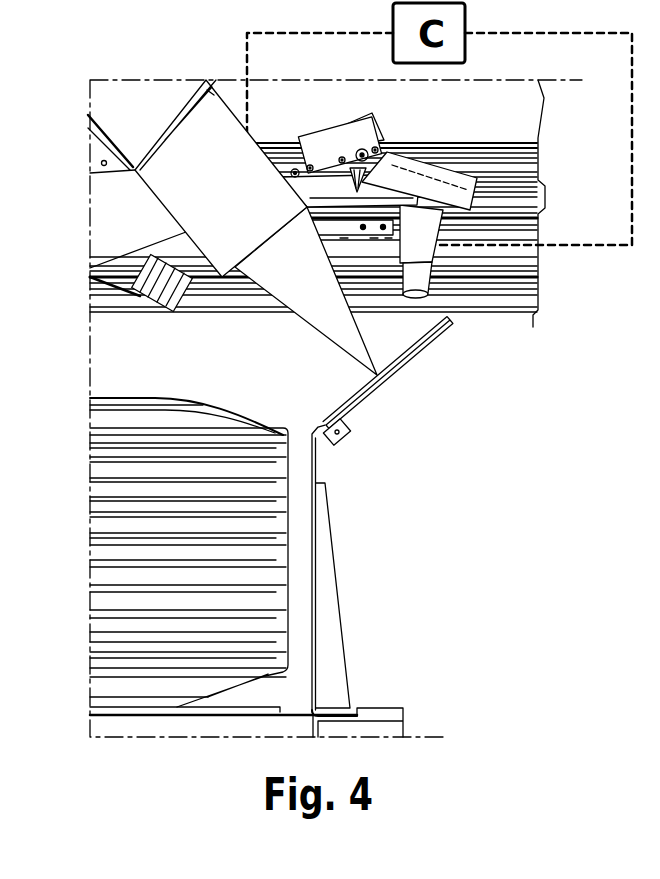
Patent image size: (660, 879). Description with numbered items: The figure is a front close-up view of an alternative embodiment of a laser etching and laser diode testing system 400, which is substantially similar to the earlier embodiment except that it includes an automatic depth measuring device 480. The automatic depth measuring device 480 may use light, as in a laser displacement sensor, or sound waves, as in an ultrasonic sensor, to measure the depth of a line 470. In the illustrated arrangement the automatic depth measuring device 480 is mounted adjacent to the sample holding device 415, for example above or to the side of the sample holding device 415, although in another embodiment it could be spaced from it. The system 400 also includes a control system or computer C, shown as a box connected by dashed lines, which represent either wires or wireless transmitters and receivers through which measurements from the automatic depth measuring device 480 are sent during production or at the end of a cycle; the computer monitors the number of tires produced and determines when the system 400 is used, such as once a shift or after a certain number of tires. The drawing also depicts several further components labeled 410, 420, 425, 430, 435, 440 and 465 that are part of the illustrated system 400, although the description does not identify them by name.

The laser etching and laser diode testing system 400 is at (106, 60).
The shelf stack / storage unit 410 is at (130, 397).
The sample holding device 415 is at (312, 450).
The guide rail 420 is at (433, 350).
The mounting plate 425 is at (218, 143).
The side panel 430 is at (322, 657).
The cylinder / actuator 435 is at (462, 326).
The slide block 440 is at (341, 435).
The top cover 465 is at (100, 397).
The line 470 is at (367, 378).
The automatic depth measuring device 480 is at (428, 252).